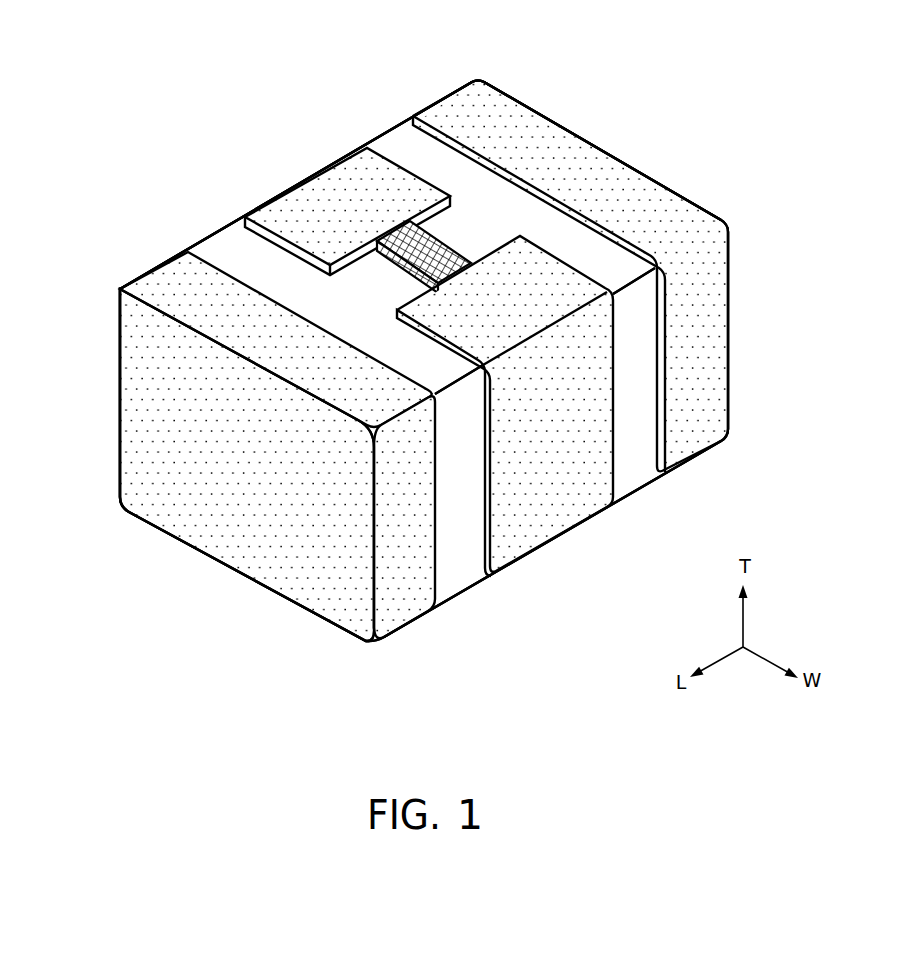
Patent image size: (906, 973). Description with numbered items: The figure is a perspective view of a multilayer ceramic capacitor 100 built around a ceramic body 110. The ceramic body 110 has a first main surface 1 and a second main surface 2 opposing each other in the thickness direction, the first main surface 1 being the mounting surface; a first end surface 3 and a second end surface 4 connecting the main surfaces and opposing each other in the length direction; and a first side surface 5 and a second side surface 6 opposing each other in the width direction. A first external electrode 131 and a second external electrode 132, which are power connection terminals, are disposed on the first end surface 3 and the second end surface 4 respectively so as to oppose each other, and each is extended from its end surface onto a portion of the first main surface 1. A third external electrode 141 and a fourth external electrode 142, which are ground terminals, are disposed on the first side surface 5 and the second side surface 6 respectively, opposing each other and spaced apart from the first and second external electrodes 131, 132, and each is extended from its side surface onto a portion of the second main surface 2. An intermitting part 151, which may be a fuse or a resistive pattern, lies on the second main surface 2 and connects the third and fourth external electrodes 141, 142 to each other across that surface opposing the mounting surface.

The multilayer ceramic capacitor 100 is at (216, 61).
The ceramic body 110 is at (228, 248).
The first external electrode 131 is at (168, 275).
The second external electrode 132 is at (460, 107).
The third external electrode 141 is at (317, 188).
The fourth external electrode 142 is at (552, 523).
The intermitting part 151 is at (435, 253).
The first main surface 1 is at (466, 600).
The second main surface 2 is at (560, 222).
The first end surface 3 is at (157, 442).
The second end surface 4 is at (545, 100).
The first side surface 5 is at (380, 110).
The second side surface 6 is at (642, 462).